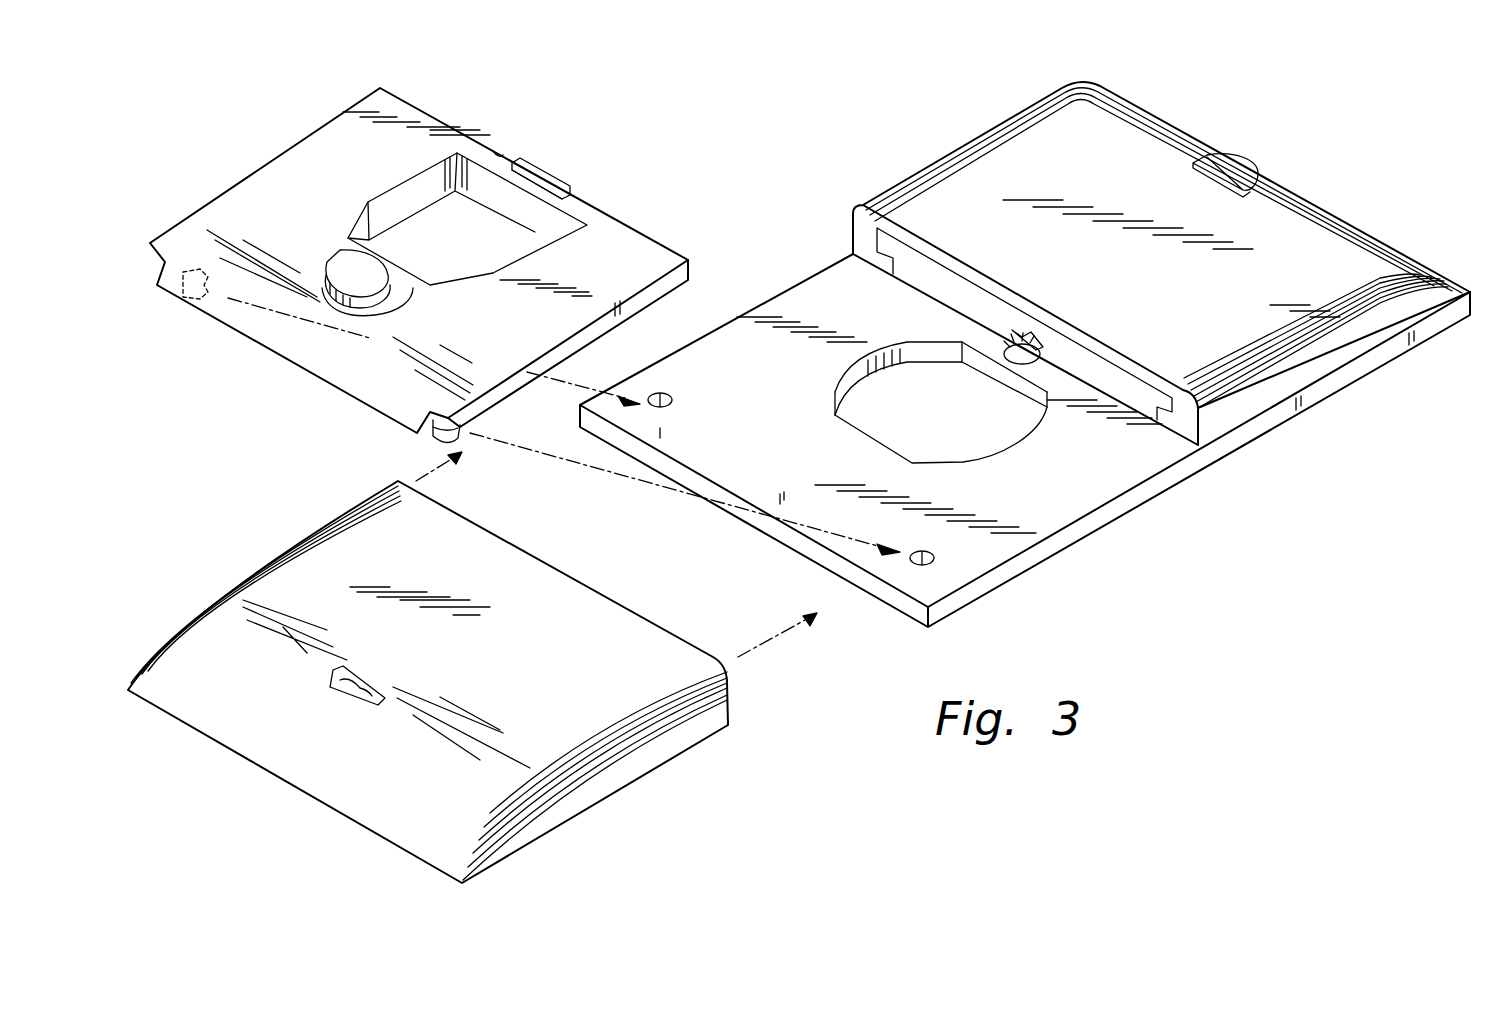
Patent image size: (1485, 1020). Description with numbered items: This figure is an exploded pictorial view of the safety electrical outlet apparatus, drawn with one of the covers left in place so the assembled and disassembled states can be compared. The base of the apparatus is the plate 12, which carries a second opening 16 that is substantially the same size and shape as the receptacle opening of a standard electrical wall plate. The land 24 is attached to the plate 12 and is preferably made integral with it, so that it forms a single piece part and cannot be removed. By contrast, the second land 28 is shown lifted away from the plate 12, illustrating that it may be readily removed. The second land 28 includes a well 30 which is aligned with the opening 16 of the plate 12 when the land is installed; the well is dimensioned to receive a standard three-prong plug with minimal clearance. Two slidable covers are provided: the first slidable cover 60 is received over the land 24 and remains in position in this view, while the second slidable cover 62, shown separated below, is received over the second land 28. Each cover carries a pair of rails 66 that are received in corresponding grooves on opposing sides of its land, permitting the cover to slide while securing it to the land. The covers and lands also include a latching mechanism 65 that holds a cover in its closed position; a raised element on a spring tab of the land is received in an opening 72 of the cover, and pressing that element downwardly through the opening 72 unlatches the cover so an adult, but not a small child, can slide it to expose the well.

The plate 12 is at (1030, 517).
The second opening 16 is at (835, 402).
The land 24 is at (1136, 392).
The second land 28 is at (378, 146).
The well 30 is at (462, 255).
The first slidable cover 60 is at (1317, 325).
The second slidable cover 62 is at (580, 770).
The latching mechanism 65 is at (1264, 146).
The rails 66 is at (845, 240).
The opening 72 is at (333, 690).